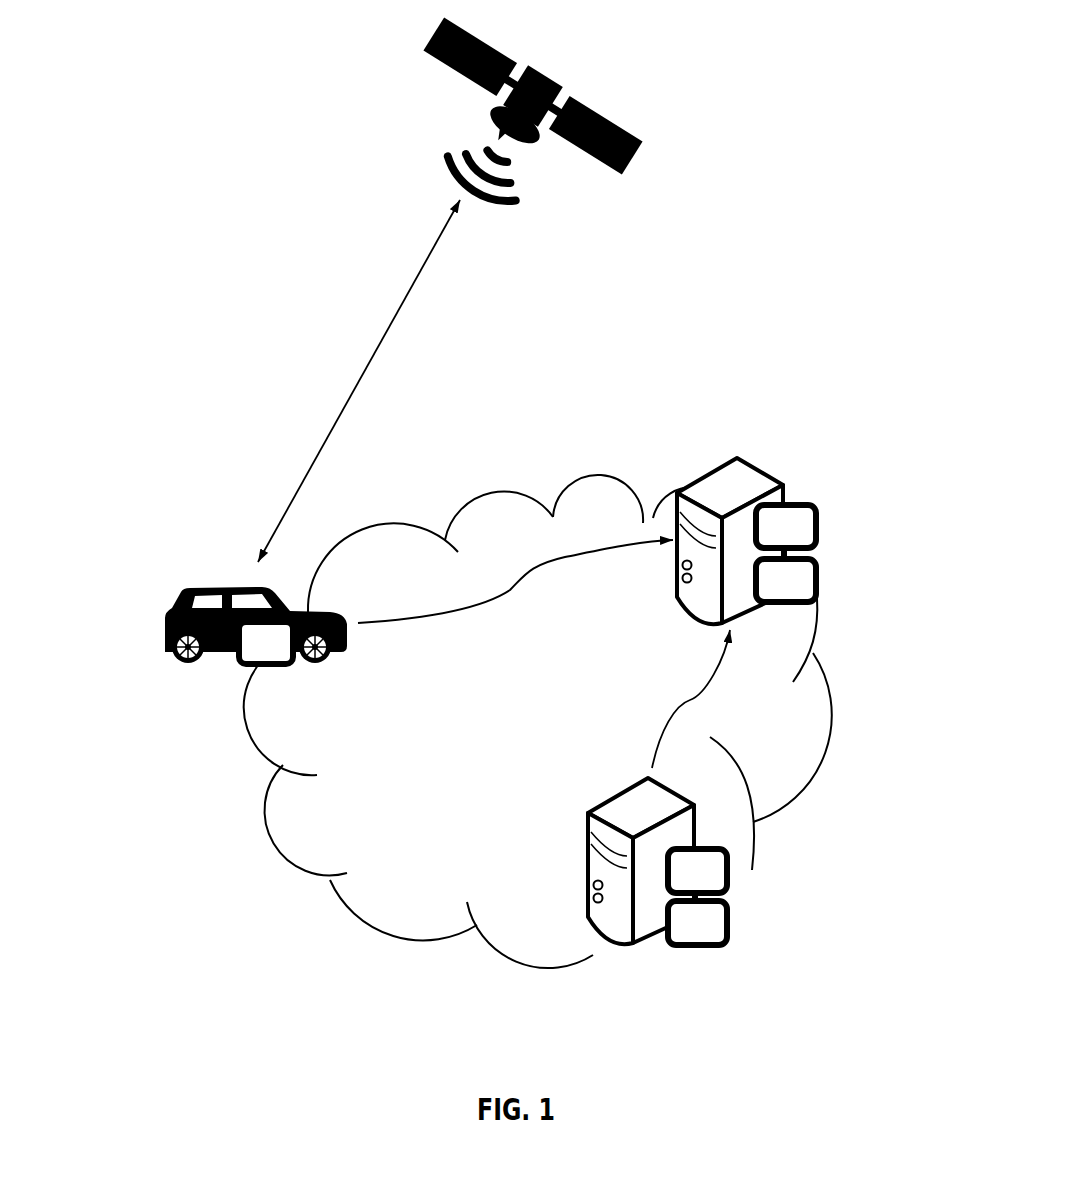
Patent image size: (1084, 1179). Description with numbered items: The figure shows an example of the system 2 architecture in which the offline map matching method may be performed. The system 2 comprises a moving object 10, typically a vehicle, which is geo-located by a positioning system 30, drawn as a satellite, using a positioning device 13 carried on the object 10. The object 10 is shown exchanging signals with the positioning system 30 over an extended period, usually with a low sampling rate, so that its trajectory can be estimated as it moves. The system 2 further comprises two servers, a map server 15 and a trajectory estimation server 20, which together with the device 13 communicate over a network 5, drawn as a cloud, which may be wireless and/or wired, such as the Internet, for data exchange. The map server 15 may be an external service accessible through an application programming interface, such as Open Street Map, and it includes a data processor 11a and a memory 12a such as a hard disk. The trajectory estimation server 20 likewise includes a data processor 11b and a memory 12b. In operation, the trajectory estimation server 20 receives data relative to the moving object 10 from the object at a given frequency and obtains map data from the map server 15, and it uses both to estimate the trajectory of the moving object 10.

The system 2 is at (247, 267).
The positioning system 30 is at (632, 73).
The trajectory estimation server 20 is at (730, 452).
The memory 12b is at (823, 522).
The data processor 11b is at (823, 578).
The moving object 10 is at (148, 626).
The positioning device 13 is at (253, 670).
The network 5 is at (835, 718).
The map server 15 is at (651, 962).
The memory 12a is at (730, 850).
The data processor 11a is at (735, 923).